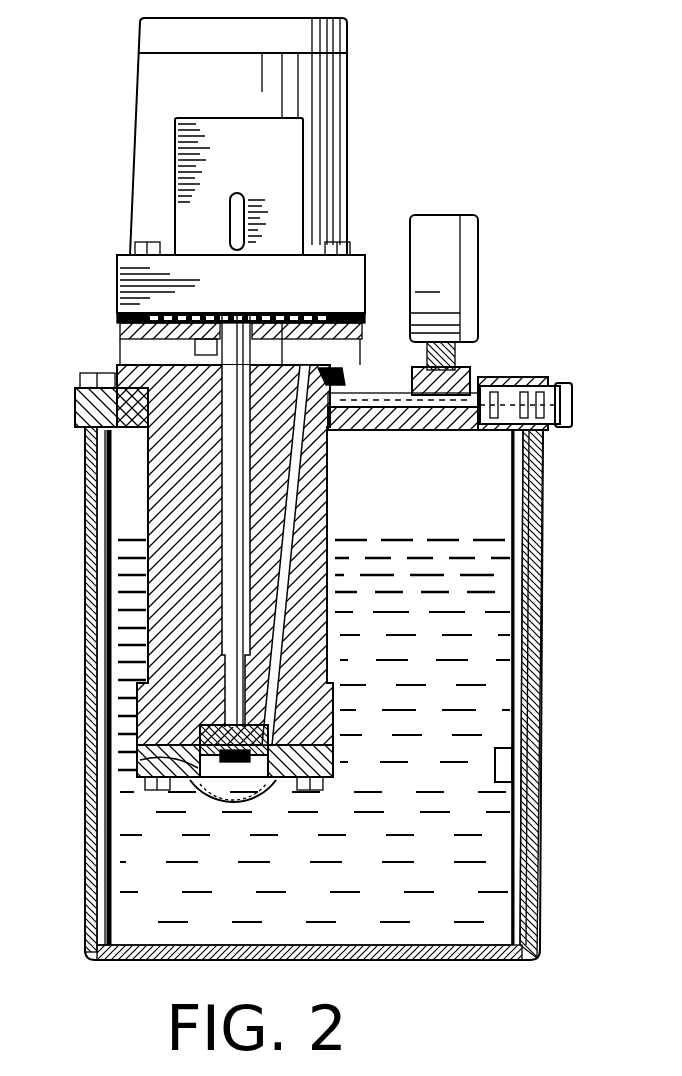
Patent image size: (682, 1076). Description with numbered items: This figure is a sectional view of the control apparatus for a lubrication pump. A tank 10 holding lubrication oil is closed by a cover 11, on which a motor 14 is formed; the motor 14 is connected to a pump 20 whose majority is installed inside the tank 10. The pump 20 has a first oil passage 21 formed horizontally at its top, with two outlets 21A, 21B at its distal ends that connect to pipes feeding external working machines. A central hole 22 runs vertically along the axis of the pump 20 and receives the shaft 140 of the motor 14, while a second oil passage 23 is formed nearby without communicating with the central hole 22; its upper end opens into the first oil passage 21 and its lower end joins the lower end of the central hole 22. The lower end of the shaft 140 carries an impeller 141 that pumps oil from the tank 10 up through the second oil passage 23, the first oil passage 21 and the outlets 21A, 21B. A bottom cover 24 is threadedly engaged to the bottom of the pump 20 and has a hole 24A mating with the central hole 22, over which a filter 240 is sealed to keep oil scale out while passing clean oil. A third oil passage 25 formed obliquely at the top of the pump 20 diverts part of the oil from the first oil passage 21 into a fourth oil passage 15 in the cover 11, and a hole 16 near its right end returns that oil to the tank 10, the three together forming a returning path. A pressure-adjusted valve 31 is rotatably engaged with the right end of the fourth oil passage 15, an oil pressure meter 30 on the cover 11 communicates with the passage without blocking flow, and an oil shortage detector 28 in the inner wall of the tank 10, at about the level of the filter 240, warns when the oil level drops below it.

The tank 10 is at (540, 683).
The cover 11 is at (512, 380).
The motor 14 is at (340, 105).
The fourth oil passage 15 is at (385, 408).
The hole 16 is at (505, 430).
The pump 20 is at (316, 513).
The first oil passage 21 is at (112, 356).
The outlet 21A is at (112, 346).
The outlet 21B is at (355, 345).
The central hole 22 is at (218, 630).
The second oil passage 23 is at (284, 562).
The bottom cover 24 is at (330, 755).
The hole 24A is at (185, 765).
The third oil passage 25 is at (340, 377).
The oil shortage detector 28 is at (514, 756).
The oil pressure meter 30 is at (472, 265).
The pressure-adjusted valve 31 is at (572, 405).
The shaft 140 is at (228, 503).
The impeller 141 is at (268, 790).
The filter 240 is at (226, 796).